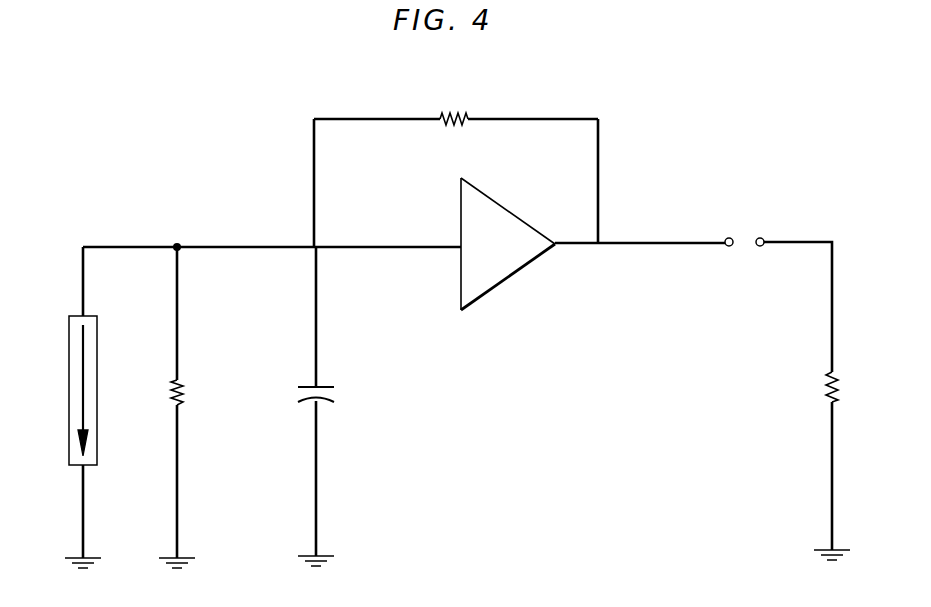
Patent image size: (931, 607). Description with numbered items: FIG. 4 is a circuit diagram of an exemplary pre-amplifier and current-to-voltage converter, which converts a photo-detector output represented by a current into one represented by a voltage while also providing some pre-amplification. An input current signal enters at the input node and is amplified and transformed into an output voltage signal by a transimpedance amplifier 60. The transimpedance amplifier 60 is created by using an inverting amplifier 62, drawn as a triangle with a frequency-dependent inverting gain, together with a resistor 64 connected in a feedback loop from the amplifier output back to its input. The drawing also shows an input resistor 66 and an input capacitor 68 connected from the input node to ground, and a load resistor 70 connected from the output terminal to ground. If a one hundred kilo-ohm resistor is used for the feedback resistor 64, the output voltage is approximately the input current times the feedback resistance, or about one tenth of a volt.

The transimpedance amplifier 60 is at (678, 549).
The inverting amplifier 62 is at (508, 279).
The feedback resistor 64 is at (462, 112).
The input resistor Rin 66 is at (182, 380).
The input capacitor Cin 68 is at (348, 374).
The load resistor RL 70 is at (847, 368).